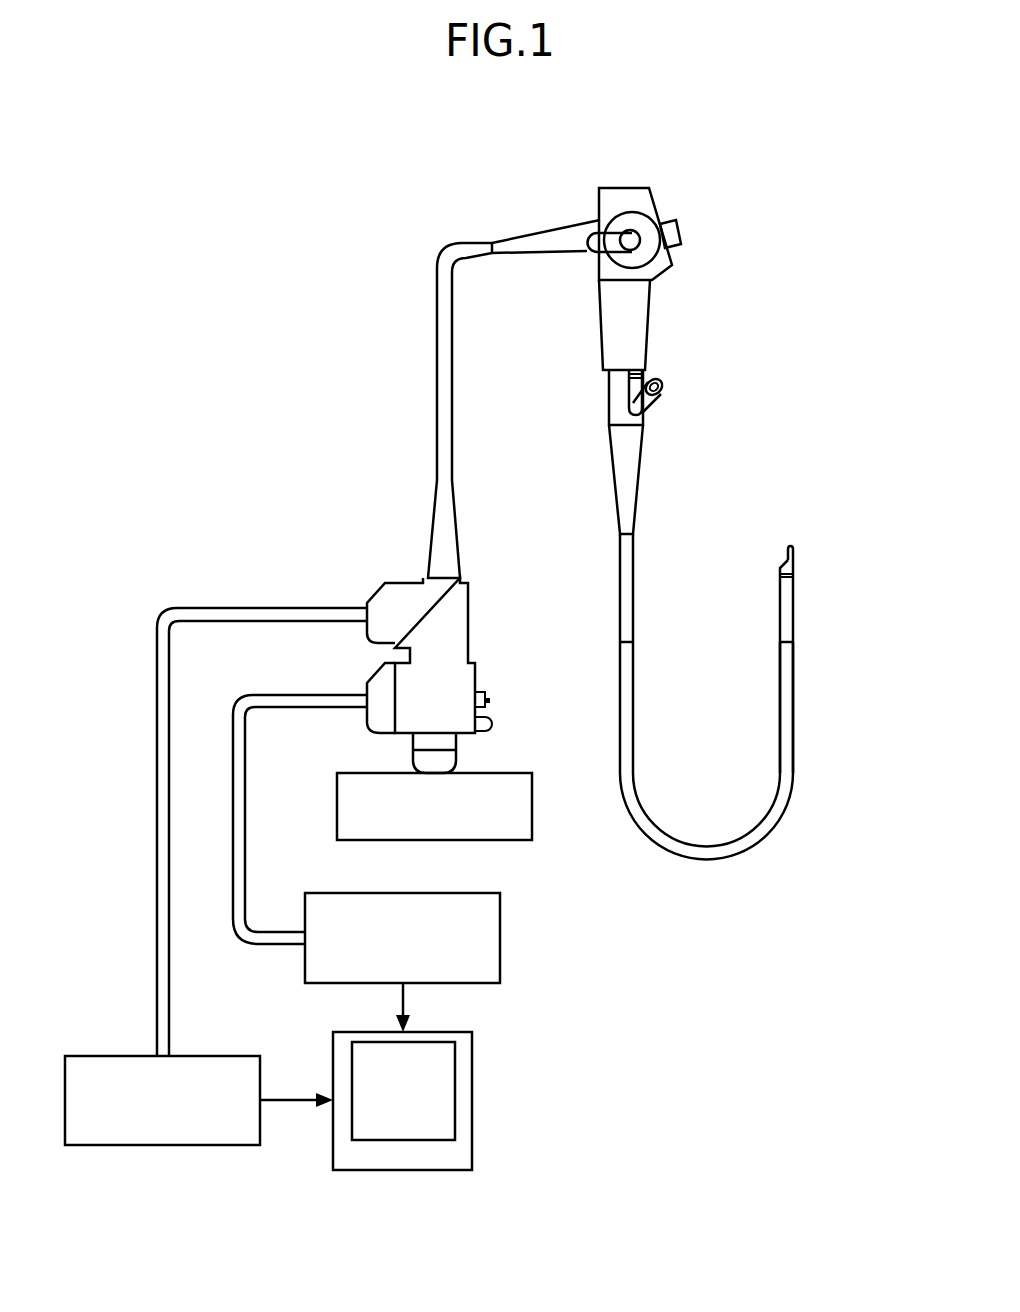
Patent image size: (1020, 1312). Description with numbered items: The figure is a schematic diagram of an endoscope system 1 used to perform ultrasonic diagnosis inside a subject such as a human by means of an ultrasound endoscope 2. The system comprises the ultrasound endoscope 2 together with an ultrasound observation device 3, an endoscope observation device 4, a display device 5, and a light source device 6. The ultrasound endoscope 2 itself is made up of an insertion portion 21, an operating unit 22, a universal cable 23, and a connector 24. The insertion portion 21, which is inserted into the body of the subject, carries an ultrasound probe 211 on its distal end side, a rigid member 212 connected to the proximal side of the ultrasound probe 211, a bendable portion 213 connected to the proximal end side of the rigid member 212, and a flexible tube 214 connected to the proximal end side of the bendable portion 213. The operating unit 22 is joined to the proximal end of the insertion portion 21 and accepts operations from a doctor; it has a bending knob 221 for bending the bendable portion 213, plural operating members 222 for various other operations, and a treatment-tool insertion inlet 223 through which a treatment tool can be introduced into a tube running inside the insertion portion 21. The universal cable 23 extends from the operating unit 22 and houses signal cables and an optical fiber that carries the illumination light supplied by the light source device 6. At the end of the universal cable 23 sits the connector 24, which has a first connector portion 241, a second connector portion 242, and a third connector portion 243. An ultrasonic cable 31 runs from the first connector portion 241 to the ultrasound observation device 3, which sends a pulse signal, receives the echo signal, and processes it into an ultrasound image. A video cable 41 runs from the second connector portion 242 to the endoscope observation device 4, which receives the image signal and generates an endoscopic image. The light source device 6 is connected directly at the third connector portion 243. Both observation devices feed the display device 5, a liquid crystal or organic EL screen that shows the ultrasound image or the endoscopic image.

The endoscope system 1 is at (272, 189).
The ultrasound endoscope 2 is at (765, 197).
The ultrasound observation device 3 is at (163, 1146).
The endoscope observation device 4 is at (456, 893).
The display device 5 is at (473, 1100).
The light source device 6 is at (533, 799).
The insertion portion 21 is at (697, 845).
The operating unit 22 is at (648, 307).
The universal cable 23 is at (450, 258).
The connector 24 is at (458, 613).
The ultrasonic cable 31 is at (155, 686).
The video cable 41 is at (237, 785).
The ultrasound probe 211 is at (790, 546).
The rigid member 212 is at (795, 553).
The bendable portion 213 is at (792, 606).
The flexible tube 214 is at (790, 742).
The bending knob 221 is at (586, 236).
The operating members 222 is at (681, 231).
The treatment-tool insertion inlet 223 is at (650, 402).
The first connector portion 241 is at (368, 601).
The second connector portion 242 is at (368, 683).
The third connector portion 243 is at (437, 760).